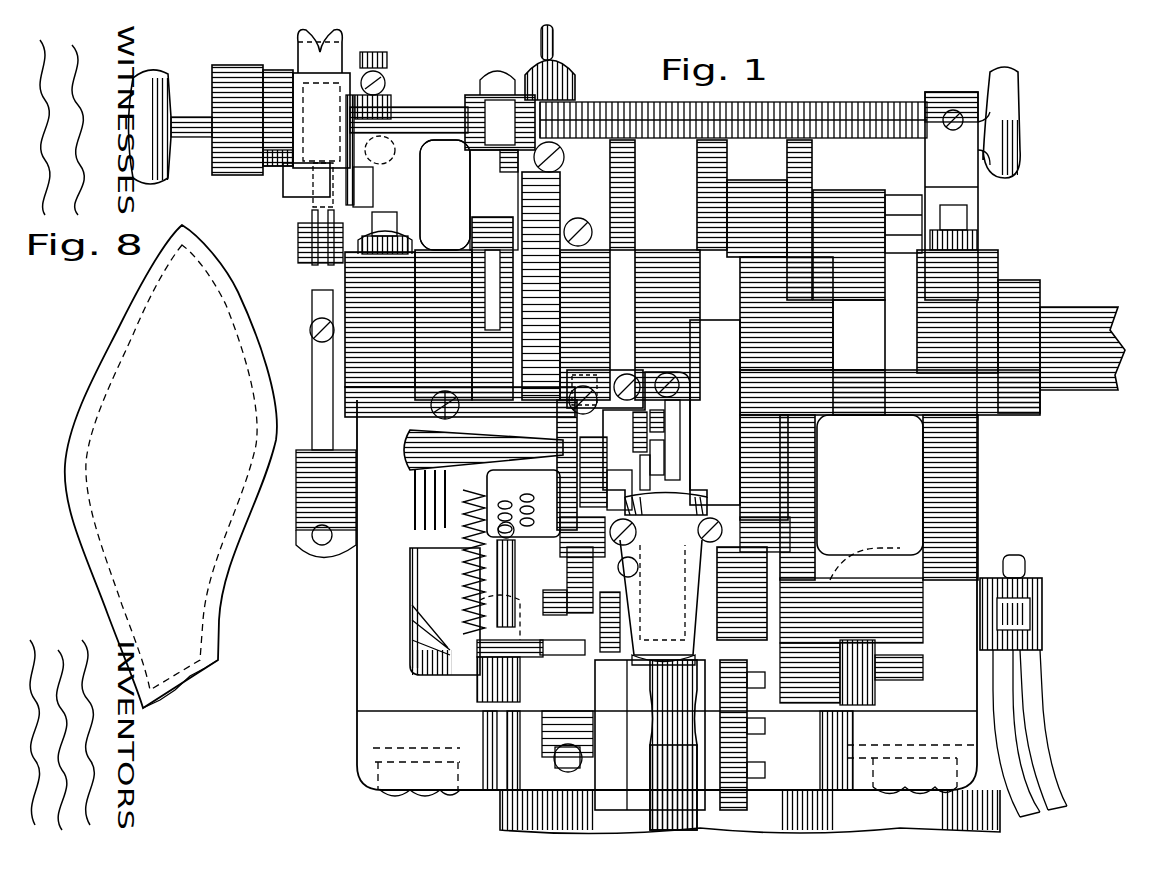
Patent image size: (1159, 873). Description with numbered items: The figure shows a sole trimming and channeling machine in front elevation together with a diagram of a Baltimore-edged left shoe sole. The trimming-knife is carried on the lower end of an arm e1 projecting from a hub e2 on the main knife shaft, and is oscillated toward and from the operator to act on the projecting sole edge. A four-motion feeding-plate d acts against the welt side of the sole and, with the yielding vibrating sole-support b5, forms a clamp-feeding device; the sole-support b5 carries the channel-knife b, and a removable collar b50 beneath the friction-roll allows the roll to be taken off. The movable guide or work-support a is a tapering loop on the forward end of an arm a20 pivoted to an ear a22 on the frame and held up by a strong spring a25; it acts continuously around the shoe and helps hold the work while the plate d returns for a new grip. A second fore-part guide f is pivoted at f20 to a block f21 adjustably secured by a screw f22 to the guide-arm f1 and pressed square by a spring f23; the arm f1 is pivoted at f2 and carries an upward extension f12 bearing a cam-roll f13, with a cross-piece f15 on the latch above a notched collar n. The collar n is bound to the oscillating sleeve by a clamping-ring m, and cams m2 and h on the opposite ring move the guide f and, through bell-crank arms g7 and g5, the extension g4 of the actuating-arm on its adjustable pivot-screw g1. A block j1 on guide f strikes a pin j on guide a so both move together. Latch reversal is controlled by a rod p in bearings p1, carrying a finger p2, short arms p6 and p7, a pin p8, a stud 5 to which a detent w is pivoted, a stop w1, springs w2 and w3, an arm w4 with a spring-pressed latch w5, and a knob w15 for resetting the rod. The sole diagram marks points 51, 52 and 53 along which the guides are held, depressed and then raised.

In FIG. 1, the rod p is at (178, 117).
In FIG. 1, the short arm p6 is at (228, 110).
In FIG. 1, the short arm p7 is at (222, 150).
In FIG. 1, the pin p8 is at (275, 158).
In FIG. 1, the detent w is at (300, 178).
In FIG. 1, the stop w1 is at (375, 187).
In FIG. 1, the spring w2 is at (378, 150).
In FIG. 1, the spring-pressed latch w5 is at (320, 210).
In FIG. 1, the stud 5 is at (384, 82).
In FIG. 1, the arm w4 is at (318, 380).
In FIG. 1, the pivot shaft f2 is at (296, 495).
In FIG. 1, the bell-crank lever arm g7 is at (408, 325).
In FIG. 1, the cam m2 is at (505, 230).
In FIG. 1, the cam h is at (470, 240).
In FIG. 1, the clamping-ring m is at (600, 245).
In FIG. 1, the notched collar n is at (585, 325).
In FIG. 1, the hub e2 is at (630, 282).
In FIG. 1, the bearing p1 is at (952, 106).
In FIG. 1, the knob w15 is at (1006, 80).
In FIG. 1, the spring w3 is at (878, 106).
In FIG. 1, the finger p2 is at (497, 80).
In FIG. 1, the cross-piece f15 is at (554, 36).
In FIG. 1, the upward extension f12 is at (570, 90).
In FIG. 1, the cam-roll f13 is at (564, 160).
In FIG. 1, the block j1 is at (618, 372).
In FIG. 1, the block f21 is at (682, 392).
In FIG. 1, the fore-part guide f is at (655, 444).
In FIG. 1, the pivot f20 is at (680, 420).
In FIG. 1, the spring f23 is at (680, 455).
In FIG. 1, the screw f22 is at (605, 412).
In FIG. 1, the arm e1 is at (651, 472).
In FIG. 1, the upward extension g4 is at (590, 452).
In FIG. 1, the pivot-screw g1 is at (635, 478).
In FIG. 1, the bell-crank lever arm g5 is at (560, 440).
In FIG. 1, the guide-arm f1 is at (535, 441).
In FIG. 1, the ear a22 is at (456, 566).
In FIG. 1, the arm a20 is at (536, 560).
In FIG. 1, the pin j is at (638, 568).
In FIG. 1, the four-motion feeding-plate d is at (661, 597).
In FIG. 1, the guide or work-support a is at (663, 647).
In FIG. 1, the spring a25 is at (598, 646).
In FIG. 1, the channel-knife b is at (650, 735).
In FIG. 1, the sole-support b5 is at (655, 720).
In FIG. 1, the collar b50 is at (660, 795).
In FIG. 8, the point 53 is at (158, 466).
In FIG. 8, the point 52 is at (171, 467).
In FIG. 8, the point 51 is at (169, 692).